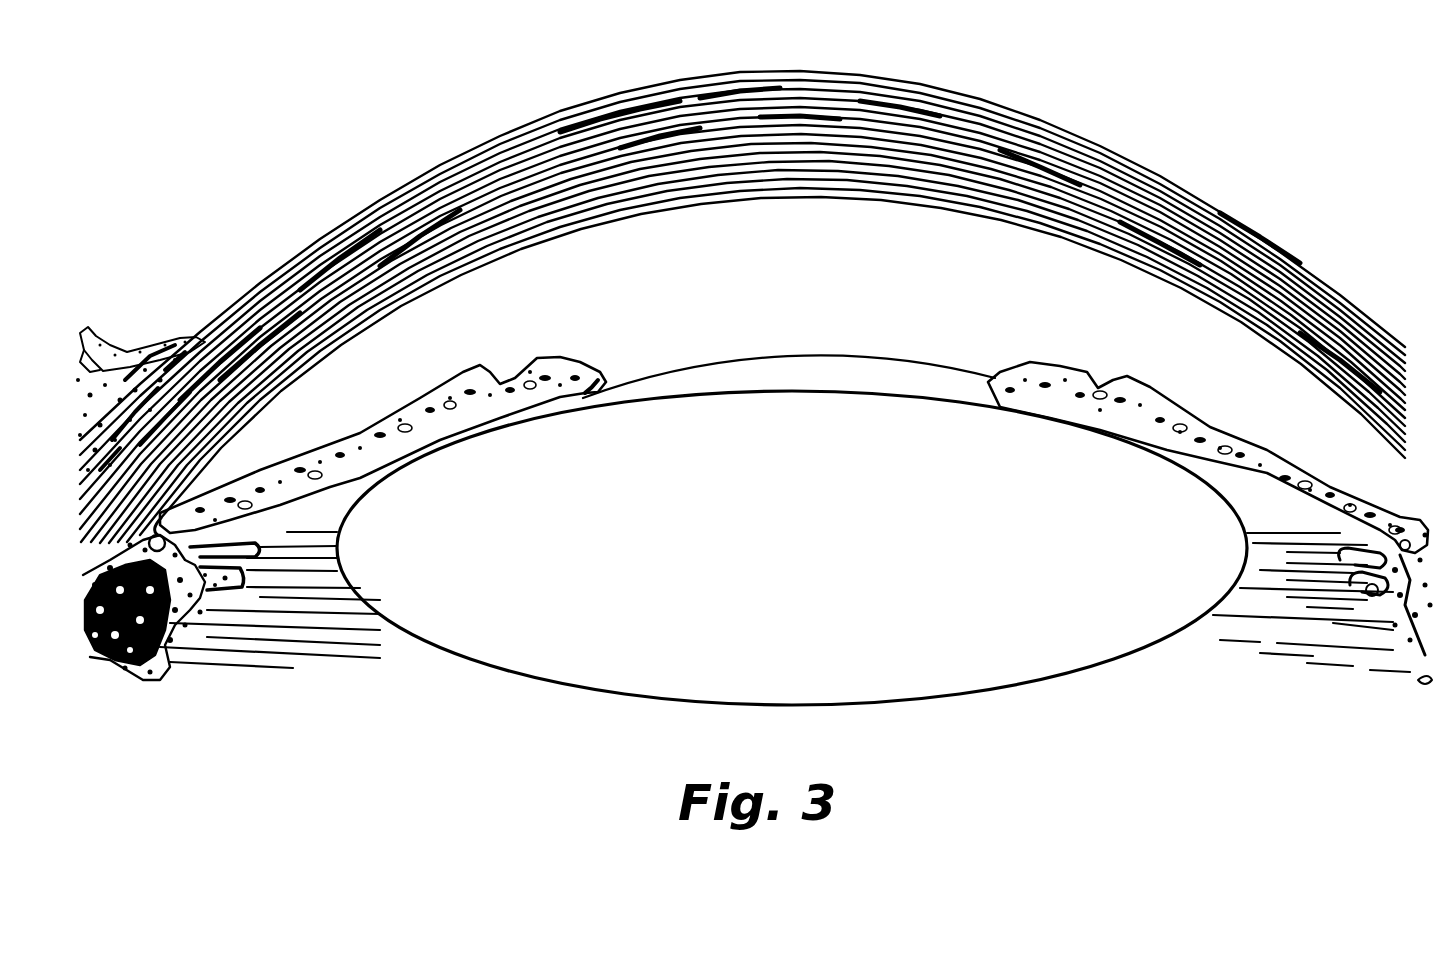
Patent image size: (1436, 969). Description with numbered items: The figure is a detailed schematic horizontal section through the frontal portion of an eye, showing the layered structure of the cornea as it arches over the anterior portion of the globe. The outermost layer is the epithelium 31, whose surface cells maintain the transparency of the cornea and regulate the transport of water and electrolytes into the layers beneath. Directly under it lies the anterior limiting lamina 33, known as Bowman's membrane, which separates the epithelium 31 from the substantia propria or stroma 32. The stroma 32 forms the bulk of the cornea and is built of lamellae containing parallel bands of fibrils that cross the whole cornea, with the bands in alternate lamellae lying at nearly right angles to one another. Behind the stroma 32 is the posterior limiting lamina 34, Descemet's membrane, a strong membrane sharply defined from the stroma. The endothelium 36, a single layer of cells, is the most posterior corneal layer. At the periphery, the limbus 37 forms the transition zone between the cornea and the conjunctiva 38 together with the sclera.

The epithelium 31 is at (623, 95).
The stroma 32 is at (777, 108).
The anterior limiting lamina 33 is at (726, 90).
The posterior limiting lamina 34 is at (722, 174).
The endothelium 36 is at (828, 192).
The limbus 37 is at (253, 289).
The conjunctiva 38 is at (180, 336).